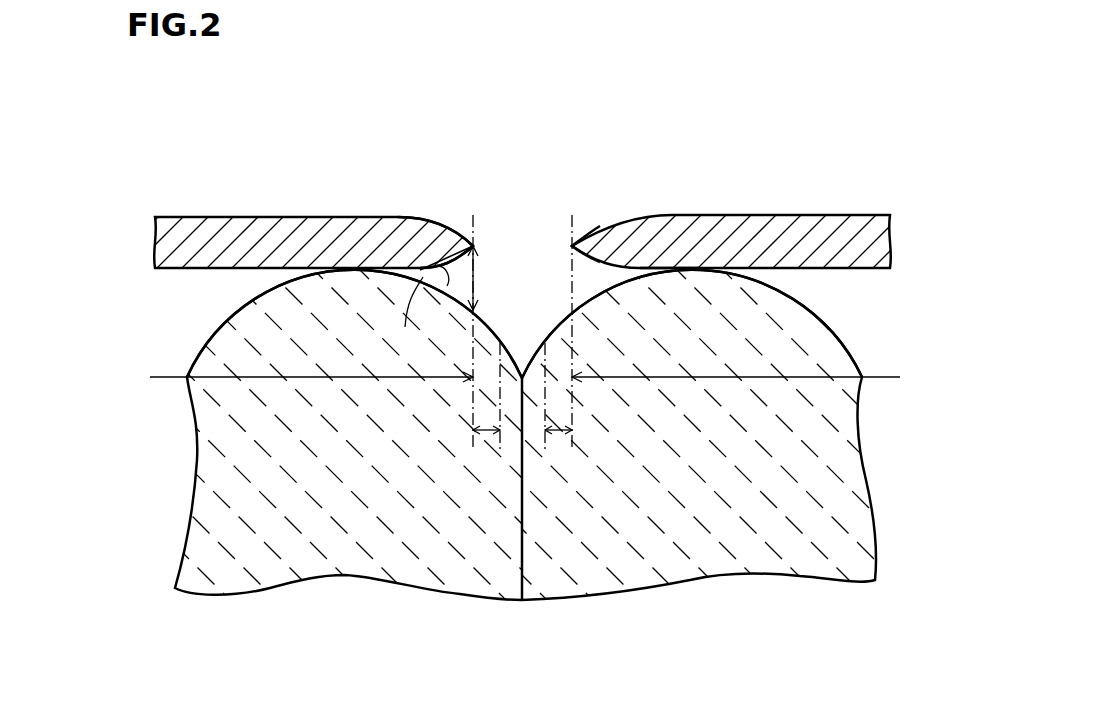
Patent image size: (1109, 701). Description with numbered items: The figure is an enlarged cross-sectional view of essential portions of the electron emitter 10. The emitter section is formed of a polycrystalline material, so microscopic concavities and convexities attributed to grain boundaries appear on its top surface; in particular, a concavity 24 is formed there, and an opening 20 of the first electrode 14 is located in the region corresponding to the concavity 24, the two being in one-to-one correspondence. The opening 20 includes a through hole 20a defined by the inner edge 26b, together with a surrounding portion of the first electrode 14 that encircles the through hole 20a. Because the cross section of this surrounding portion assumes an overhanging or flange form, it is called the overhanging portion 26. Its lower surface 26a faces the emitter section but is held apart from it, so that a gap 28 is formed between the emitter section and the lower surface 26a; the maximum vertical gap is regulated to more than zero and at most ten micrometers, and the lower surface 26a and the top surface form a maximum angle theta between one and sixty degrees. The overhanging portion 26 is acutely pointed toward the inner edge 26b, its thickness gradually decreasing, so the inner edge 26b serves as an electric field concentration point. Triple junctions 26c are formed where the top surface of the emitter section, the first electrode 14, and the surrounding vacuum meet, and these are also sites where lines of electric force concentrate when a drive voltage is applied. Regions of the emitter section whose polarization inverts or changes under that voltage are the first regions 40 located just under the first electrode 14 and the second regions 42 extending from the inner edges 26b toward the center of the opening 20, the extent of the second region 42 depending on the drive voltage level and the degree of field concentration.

The electron emitter 10 is at (224, 139).
The first electrode 14 is at (322, 232).
The opening 20 is at (565, 142).
The through hole 20a is at (520, 245).
The concavity 24 is at (513, 354).
The overhanging portion 26 is at (447, 215).
The lower surface of the overhanging portion 26a is at (403, 218).
The inner edge 26b is at (572, 246).
The triple junction 26c is at (687, 268).
The gap 28 is at (455, 289).
The first region 40 is at (333, 378).
The second region 42 is at (483, 434).